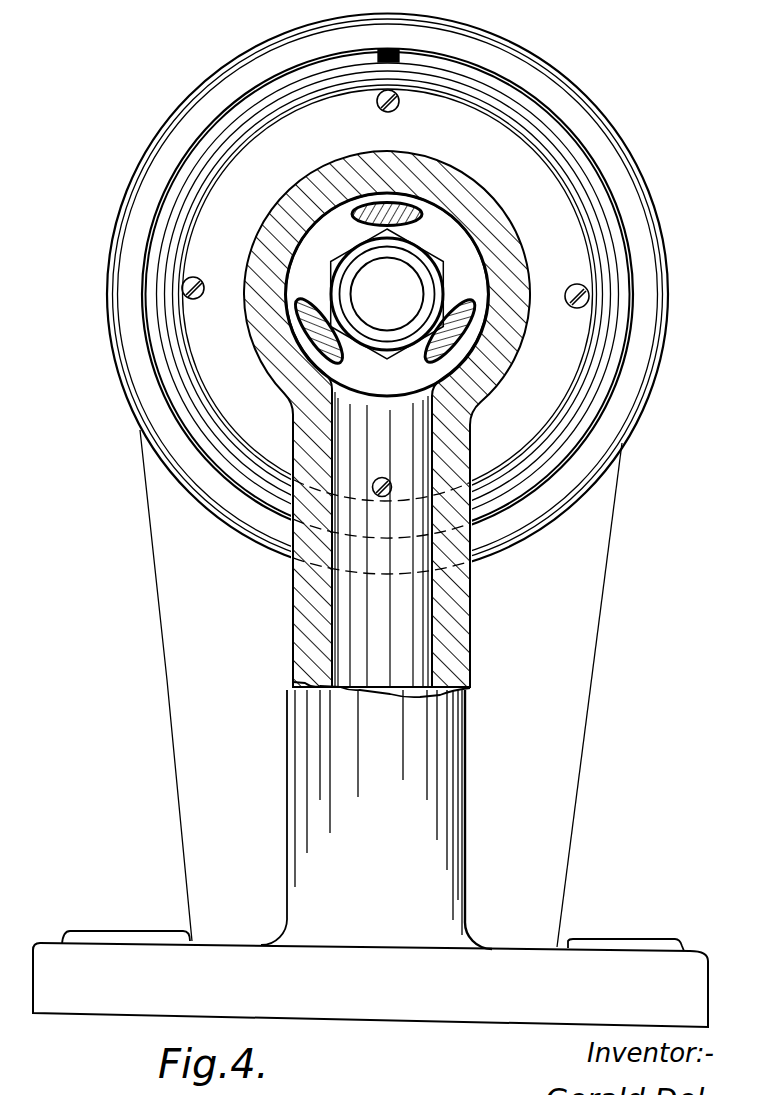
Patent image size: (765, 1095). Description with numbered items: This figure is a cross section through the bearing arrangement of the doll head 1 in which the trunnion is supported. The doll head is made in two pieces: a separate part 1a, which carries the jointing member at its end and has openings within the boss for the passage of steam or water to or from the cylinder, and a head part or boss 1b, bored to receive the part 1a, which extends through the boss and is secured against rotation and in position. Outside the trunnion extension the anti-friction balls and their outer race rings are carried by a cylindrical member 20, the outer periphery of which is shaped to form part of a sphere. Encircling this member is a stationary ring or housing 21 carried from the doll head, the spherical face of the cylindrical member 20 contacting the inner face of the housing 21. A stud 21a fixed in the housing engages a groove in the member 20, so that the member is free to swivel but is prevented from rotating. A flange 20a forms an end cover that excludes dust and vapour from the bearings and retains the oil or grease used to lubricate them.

The doll head 1 is at (370, 728).
The part of the doll head 1a is at (381, 328).
The head part or boss 1b is at (268, 252).
The cylindrical member 20 is at (276, 97).
The flange 20a is at (513, 163).
The stationary ring or housing 21 is at (262, 535).
The stud 21a is at (379, 62).